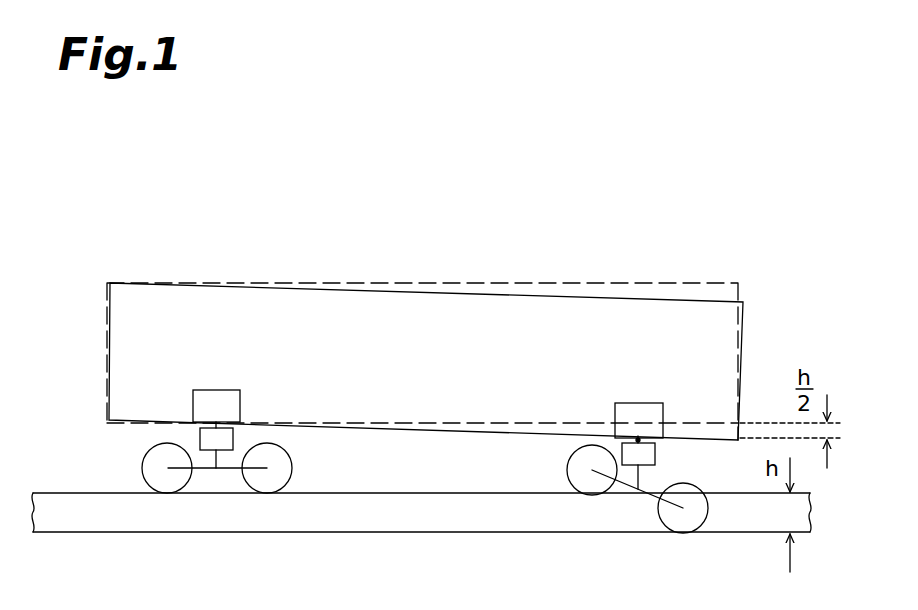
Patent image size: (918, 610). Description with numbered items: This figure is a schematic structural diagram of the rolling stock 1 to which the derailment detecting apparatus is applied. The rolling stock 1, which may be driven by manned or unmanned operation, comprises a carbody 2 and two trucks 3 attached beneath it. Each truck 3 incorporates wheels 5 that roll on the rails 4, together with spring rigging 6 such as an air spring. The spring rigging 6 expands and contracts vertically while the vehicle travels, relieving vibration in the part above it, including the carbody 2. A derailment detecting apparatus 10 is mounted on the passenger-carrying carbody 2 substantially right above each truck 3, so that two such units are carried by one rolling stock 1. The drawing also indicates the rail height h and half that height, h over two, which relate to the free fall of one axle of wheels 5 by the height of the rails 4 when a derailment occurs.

The rolling stock 1 is at (484, 252).
The carbody 2 is at (107, 345).
The truck 3 is at (125, 455).
The rail 4 is at (368, 533).
The wheel 5 is at (152, 480).
The spring rigging 6 is at (208, 447).
The derailment detecting apparatus 10 is at (214, 400).